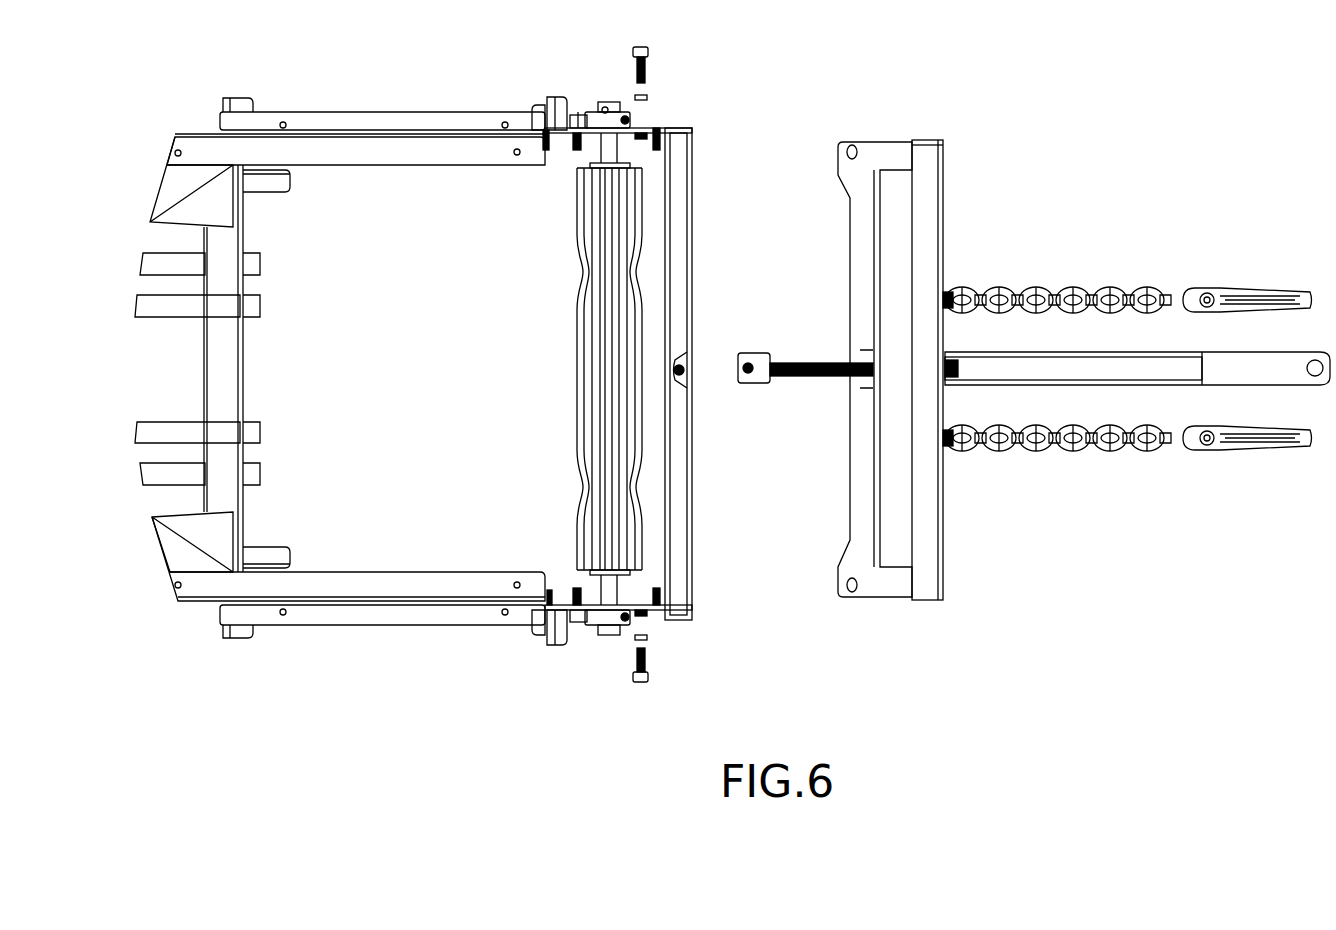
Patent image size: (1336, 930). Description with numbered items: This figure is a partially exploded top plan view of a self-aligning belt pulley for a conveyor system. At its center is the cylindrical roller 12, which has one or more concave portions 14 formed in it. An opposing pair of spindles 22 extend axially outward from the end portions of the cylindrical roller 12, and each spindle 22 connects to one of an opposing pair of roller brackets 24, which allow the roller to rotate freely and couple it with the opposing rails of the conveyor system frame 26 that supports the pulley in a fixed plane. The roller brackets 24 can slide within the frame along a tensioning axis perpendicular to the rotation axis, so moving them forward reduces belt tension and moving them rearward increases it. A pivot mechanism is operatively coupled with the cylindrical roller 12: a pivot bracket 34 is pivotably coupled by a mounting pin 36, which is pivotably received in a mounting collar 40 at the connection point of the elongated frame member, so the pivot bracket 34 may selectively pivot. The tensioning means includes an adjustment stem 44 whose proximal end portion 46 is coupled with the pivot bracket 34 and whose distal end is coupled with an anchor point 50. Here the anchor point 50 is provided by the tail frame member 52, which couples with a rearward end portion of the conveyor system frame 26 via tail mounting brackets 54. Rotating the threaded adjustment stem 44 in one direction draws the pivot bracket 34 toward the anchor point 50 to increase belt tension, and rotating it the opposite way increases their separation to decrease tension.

The cylindrical roller 12 is at (613, 374).
The concave portion 14 is at (560, 266).
The spindle 22 is at (598, 583).
The roller bracket 24 is at (598, 630).
The conveyor system frame 26 is at (399, 157).
The pivot bracket 34 is at (773, 387).
The mounting pin 36 is at (748, 380).
The mounting collar 40 is at (684, 368).
The adjustment stem 44 is at (808, 378).
The proximal end portion 46 is at (800, 406).
The anchor point 50 is at (946, 355).
The tail frame member 52 is at (947, 497).
The tail mounting bracket 54 is at (450, 622).